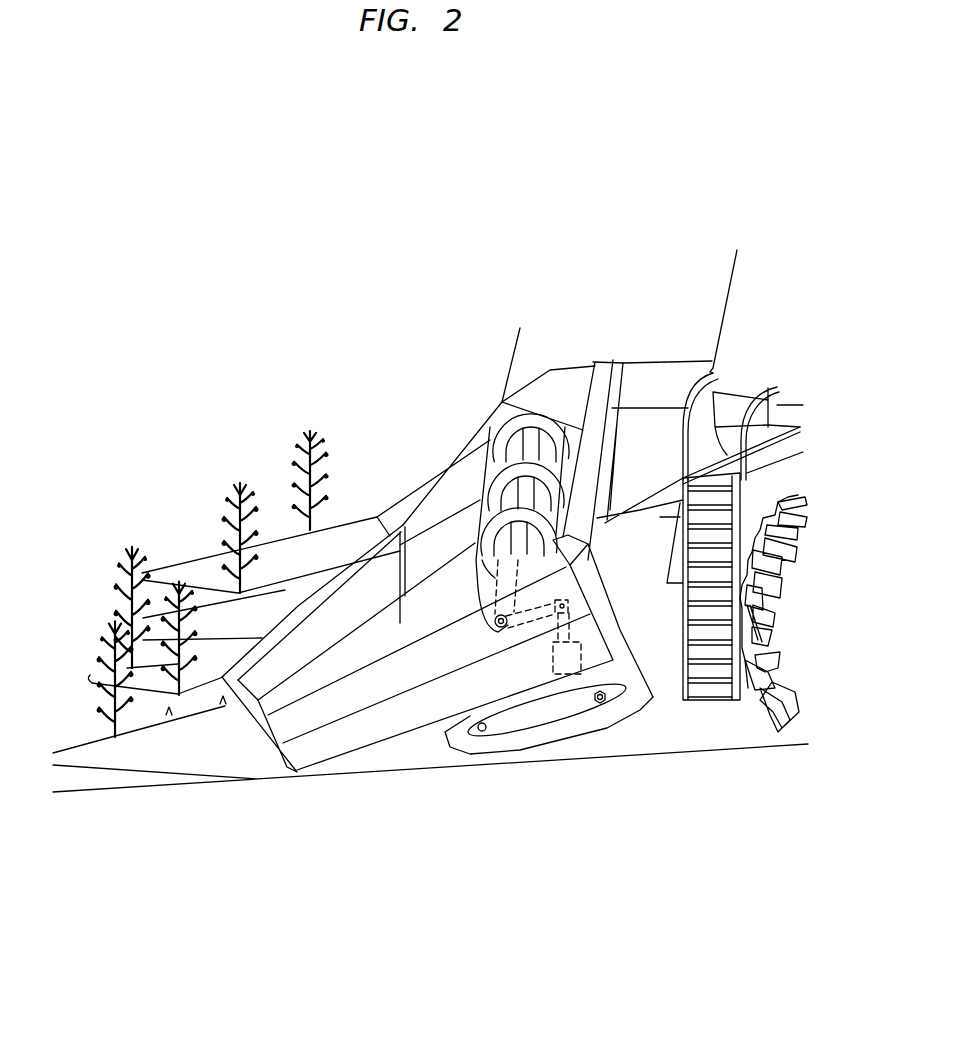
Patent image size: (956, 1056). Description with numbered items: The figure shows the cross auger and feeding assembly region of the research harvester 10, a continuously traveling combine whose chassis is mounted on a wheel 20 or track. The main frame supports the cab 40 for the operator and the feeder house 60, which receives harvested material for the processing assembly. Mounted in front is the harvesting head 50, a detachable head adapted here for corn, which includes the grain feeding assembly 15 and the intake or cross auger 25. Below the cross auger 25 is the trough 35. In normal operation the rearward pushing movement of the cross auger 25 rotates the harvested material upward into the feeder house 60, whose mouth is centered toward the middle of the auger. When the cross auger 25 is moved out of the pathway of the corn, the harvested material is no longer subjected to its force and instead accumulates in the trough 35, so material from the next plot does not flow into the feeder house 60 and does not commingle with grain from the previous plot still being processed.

The research harvester 10 is at (667, 583).
The grain feeding assembly 15 is at (447, 533).
The wheel 20 is at (762, 688).
The cross auger 25 is at (438, 545).
The trough 35 is at (476, 572).
The cab 40 is at (775, 351).
The harvesting head 50 is at (490, 430).
The feeder house 60 is at (563, 363).